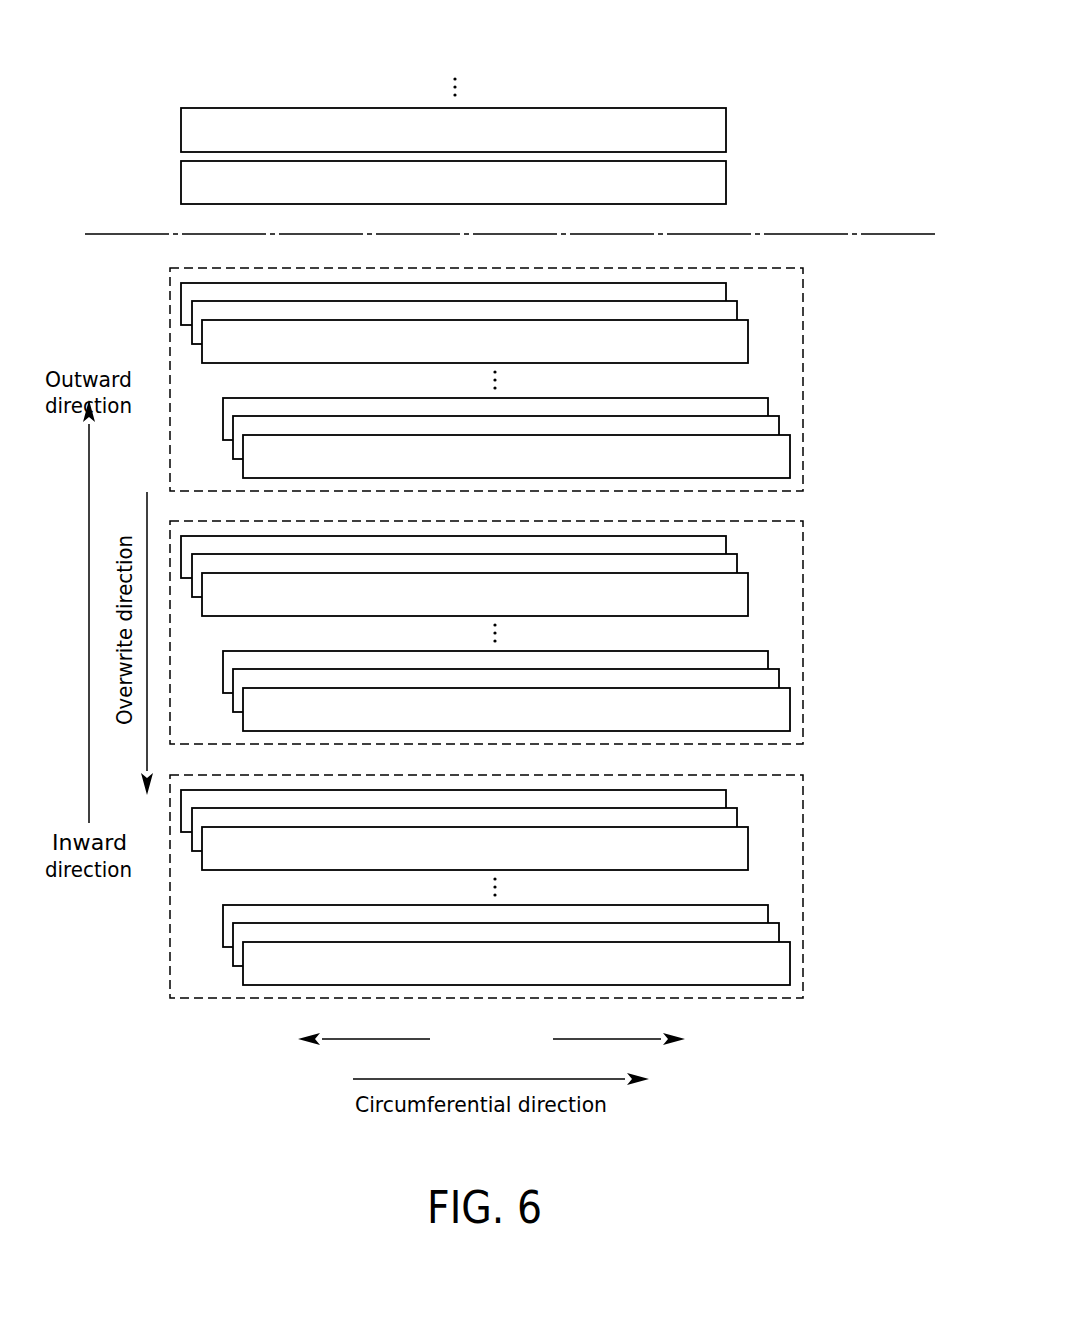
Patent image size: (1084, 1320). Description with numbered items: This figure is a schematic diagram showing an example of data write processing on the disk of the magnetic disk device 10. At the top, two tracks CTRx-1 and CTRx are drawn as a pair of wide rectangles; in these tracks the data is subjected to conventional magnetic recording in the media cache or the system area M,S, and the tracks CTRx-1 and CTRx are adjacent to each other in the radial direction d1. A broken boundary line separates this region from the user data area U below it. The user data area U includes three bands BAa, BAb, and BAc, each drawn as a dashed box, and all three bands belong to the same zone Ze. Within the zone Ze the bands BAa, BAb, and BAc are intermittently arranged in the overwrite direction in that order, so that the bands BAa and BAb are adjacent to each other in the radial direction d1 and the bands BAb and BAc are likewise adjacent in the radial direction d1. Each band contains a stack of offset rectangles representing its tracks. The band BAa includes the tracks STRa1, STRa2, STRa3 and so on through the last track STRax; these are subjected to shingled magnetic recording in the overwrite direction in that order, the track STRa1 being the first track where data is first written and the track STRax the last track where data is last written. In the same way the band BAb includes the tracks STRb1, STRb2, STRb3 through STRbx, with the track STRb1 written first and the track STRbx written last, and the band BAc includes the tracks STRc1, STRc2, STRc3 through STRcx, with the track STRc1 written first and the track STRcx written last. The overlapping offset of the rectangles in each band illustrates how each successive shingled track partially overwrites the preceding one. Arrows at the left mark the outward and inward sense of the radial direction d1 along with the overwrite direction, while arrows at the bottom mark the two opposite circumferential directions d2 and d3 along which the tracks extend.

The magnetic disk device 10 is at (800, 64).
The media cache or system area M,S is at (822, 102).
The user data area U is at (866, 254).
The track CTRx-1 is at (713, 130).
The track CTRx is at (713, 183).
The band BAa is at (765, 268).
The band BAb is at (512, 618).
The band BAc is at (511, 872).
The track STRa1 is at (713, 292).
The track STRa2 is at (725, 313).
The track STRa3 is at (737, 343).
The track STRax is at (782, 457).
The track STRb1 is at (537, 554).
The track STRb2 is at (549, 575).
The track STRb3 is at (559, 594).
The track STRbx is at (585, 709).
The track STRc1 is at (536, 808).
The track STRc2 is at (548, 829).
The track STRc3 is at (558, 848).
The track STRcx is at (584, 963).
The zone Ze is at (813, 1011).
The radial direction d1 is at (76, 623).
The circumferential direction d2 is at (626, 1040).
The circumferential direction (reverse) d3 is at (359, 1039).